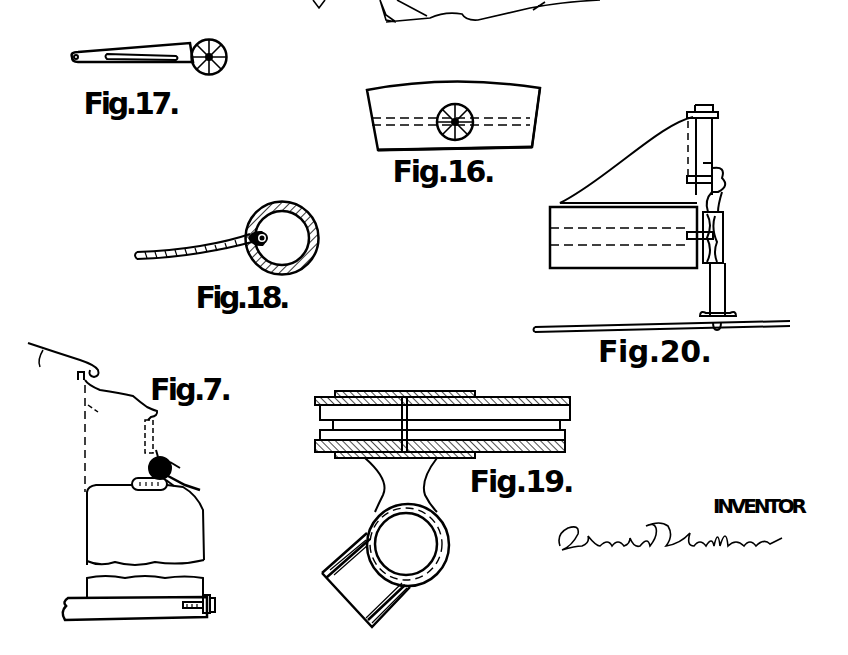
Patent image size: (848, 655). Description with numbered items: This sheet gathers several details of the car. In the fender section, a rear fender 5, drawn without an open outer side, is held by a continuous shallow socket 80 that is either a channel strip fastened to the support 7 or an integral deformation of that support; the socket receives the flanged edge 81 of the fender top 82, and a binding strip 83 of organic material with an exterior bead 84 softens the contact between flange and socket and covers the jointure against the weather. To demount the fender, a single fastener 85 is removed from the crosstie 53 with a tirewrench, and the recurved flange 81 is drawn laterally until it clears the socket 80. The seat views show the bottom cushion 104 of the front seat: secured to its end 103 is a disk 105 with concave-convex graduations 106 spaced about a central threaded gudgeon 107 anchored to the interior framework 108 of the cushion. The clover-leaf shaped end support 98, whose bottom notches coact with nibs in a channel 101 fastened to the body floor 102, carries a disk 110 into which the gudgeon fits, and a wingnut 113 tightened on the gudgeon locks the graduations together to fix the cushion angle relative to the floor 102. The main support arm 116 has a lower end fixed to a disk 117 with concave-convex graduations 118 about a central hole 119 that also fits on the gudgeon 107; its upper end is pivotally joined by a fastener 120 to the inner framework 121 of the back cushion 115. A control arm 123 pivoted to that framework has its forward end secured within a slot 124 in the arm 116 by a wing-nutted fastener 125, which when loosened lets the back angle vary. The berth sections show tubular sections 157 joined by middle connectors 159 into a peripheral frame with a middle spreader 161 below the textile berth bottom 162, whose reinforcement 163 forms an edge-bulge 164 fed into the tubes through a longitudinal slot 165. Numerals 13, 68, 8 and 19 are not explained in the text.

In FIG. 17, the main support arm 116 is at (108, 50).
In FIG. 20, the main support arm 116 is at (714, 139).
In FIG. 17, the slot 124 is at (154, 52).
In FIG. 17, the disk 117 is at (198, 43).
In FIG. 20, the disk 117 is at (704, 254).
In FIG. 17, the concave-convex graduations 118 is at (198, 68).
In FIG. 17, the central hole 119 is at (223, 57).
In FIG. 16, the end of bottom cushion 103 is at (370, 105).
In FIG. 16, the bottom cushion 104 is at (373, 143).
In FIG. 20, the bottom cushion 104 is at (605, 226).
In FIG. 16, the disk 105 is at (440, 110).
In FIG. 20, the disk 105 is at (688, 251).
In FIG. 16, the concave-convex graduations 106 is at (470, 111).
In FIG. 16, the threaded projection or gudgeon 107 is at (469, 131).
In FIG. 16, the interior framework of bottom cushion 108 is at (537, 108).
In FIG. 20, the back cushion 115 is at (632, 189).
In FIG. 20, the fastener 120 is at (720, 115).
In FIG. 20, the control arm 123 is at (706, 165).
In FIG. 20, the wing-nutted fastener 125 is at (724, 180).
In FIG. 20, the wingnut 113 is at (729, 236).
In FIG. 20, the inner framework of back cushion 121 is at (585, 246).
In FIG. 20, the disk 110 is at (718, 256).
In FIG. 20, the end support 98 is at (727, 283).
In FIG. 20, the channel 101 is at (730, 316).
In FIG. 20, the body floor 102 is at (618, 324).
In FIG. 18, the tubular sections 157 is at (316, 234).
In FIG. 19, the tubular sections 157 is at (318, 404).
In FIG. 18, the reinforcement 163 is at (214, 245).
In FIG. 18, the textile berth bottom 162 is at (172, 259).
In FIG. 18, the longitudinal slot 165 is at (248, 236).
In FIG. 19, the longitudinal slot 165 is at (565, 424).
In FIG. 18, the edge-bulge 164 is at (276, 230).
In FIG. 7, the outer surface 13 is at (63, 363).
In FIG. 7, the support 7 is at (125, 395).
In FIG. 7, the hidden edge 68 is at (99, 417).
In FIG. 7, the slot 8 is at (156, 424).
In FIG. 7, the socket 80 is at (166, 460).
In FIG. 7, the exterior bead 84 is at (172, 466).
In FIG. 7, the binding strip 83 is at (151, 478).
In FIG. 7, the top of fender 82 is at (198, 489).
In FIG. 7, the flanged edge 81 is at (166, 494).
In FIG. 7, the rear fender 5 is at (204, 508).
In FIG. 7, the crosstie 53 is at (127, 620).
In FIG. 7, the bracket 19 is at (211, 600).
In FIG. 7, the fastener 85 is at (216, 606).
In FIG. 19, the middle connectors 159 is at (422, 388).
In FIG. 19, the middle spreader 161 is at (378, 550).